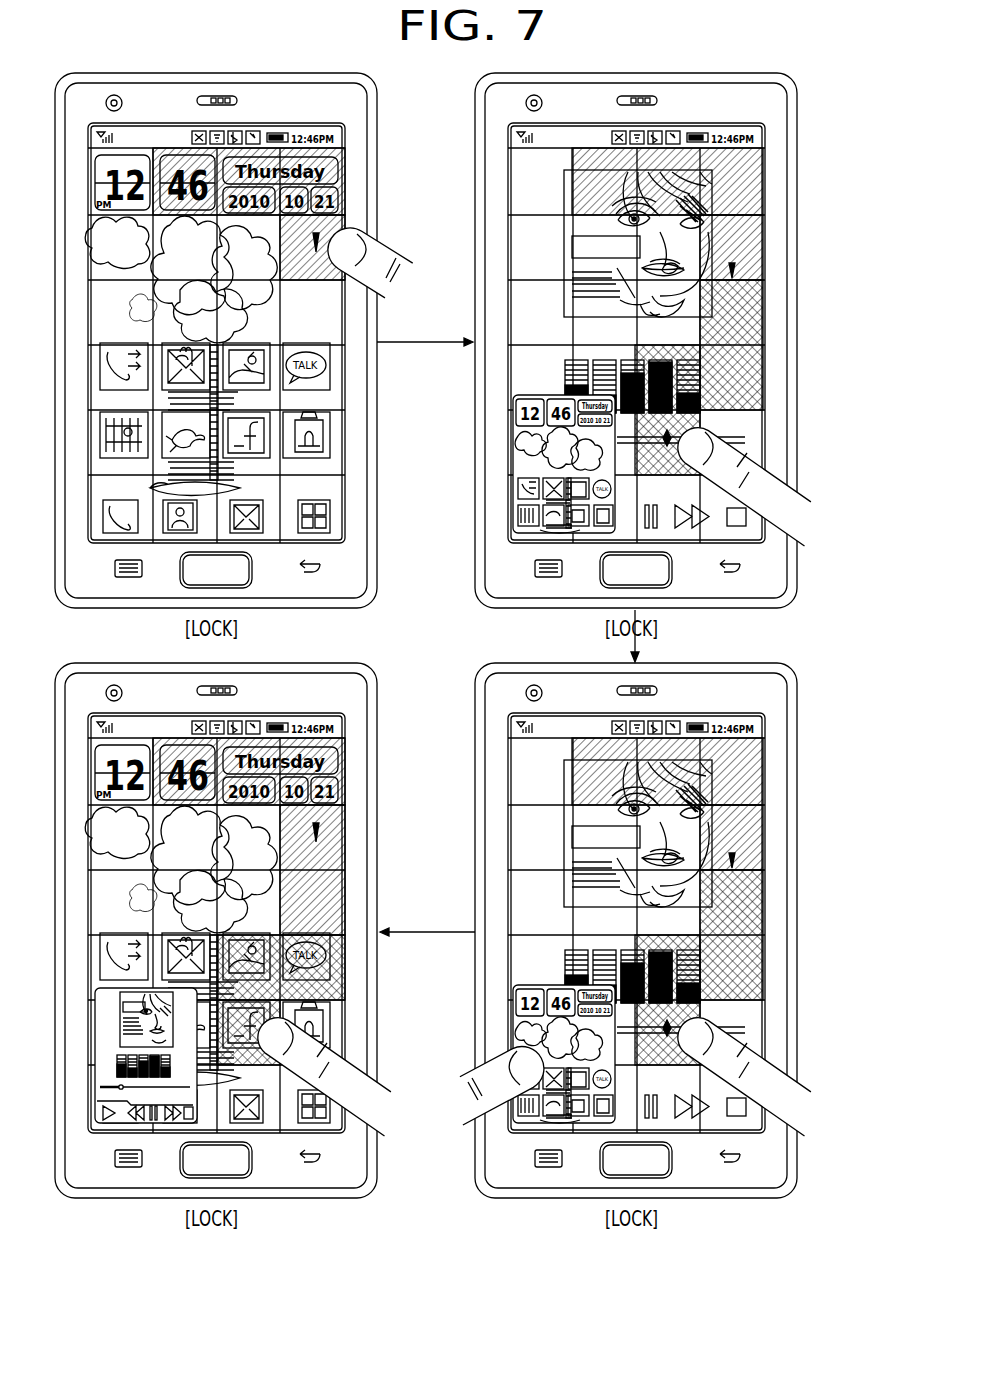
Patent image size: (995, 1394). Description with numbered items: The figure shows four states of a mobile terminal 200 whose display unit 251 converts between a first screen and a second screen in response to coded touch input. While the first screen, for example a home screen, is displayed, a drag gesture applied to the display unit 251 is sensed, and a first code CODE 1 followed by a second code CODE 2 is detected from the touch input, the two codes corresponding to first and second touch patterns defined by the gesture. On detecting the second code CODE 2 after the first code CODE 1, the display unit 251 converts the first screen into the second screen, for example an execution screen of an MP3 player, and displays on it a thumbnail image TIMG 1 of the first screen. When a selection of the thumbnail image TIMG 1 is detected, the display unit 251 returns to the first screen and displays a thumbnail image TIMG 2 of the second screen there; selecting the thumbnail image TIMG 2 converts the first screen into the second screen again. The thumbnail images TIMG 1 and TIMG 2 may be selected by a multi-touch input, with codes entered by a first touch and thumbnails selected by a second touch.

The mobile terminal 200 is at (382, 108).
The display unit 251 is at (346, 313).
The first code CODE 1 is at (335, 196).
The second code CODE 2 is at (735, 366).
The thumbnail image of the first screen TIMG 1 is at (513, 453).
The thumbnail image of the second screen TIMG 2 is at (128, 1125).